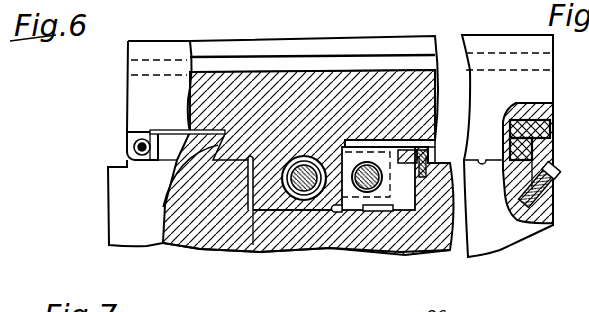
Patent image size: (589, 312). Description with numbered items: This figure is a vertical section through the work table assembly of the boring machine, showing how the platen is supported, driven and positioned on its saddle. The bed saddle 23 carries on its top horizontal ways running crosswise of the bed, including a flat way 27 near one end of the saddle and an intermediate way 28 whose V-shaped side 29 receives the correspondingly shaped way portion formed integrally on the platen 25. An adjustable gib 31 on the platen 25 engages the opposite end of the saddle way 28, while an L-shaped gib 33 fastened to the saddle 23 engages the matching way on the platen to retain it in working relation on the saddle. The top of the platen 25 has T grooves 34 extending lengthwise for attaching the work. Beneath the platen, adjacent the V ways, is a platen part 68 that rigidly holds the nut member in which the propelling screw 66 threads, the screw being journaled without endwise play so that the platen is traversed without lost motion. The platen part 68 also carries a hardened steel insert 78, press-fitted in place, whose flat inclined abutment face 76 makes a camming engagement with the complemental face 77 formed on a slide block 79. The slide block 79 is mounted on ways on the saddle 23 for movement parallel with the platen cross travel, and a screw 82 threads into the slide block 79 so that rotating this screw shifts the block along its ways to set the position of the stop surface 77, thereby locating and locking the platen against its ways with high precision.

The saddle 23 is at (117, 201).
The work table or platen 25 is at (148, 41).
The flat way 27 is at (491, 158).
The intermediate way 28 is at (165, 207).
The V-shaped side 29 is at (172, 158).
The adjustable gib 31 is at (147, 132).
The L-shaped gib 33 is at (551, 128).
The T groove 34 is at (278, 66).
The screw 66 is at (304, 186).
The platen part 68 is at (250, 163).
The fixed abutment face 76 is at (309, 212).
The complemental face 77 is at (338, 202).
The hardened steel insert 78 is at (253, 212).
The slide block 79 is at (405, 198).
The screw 82 is at (371, 191).